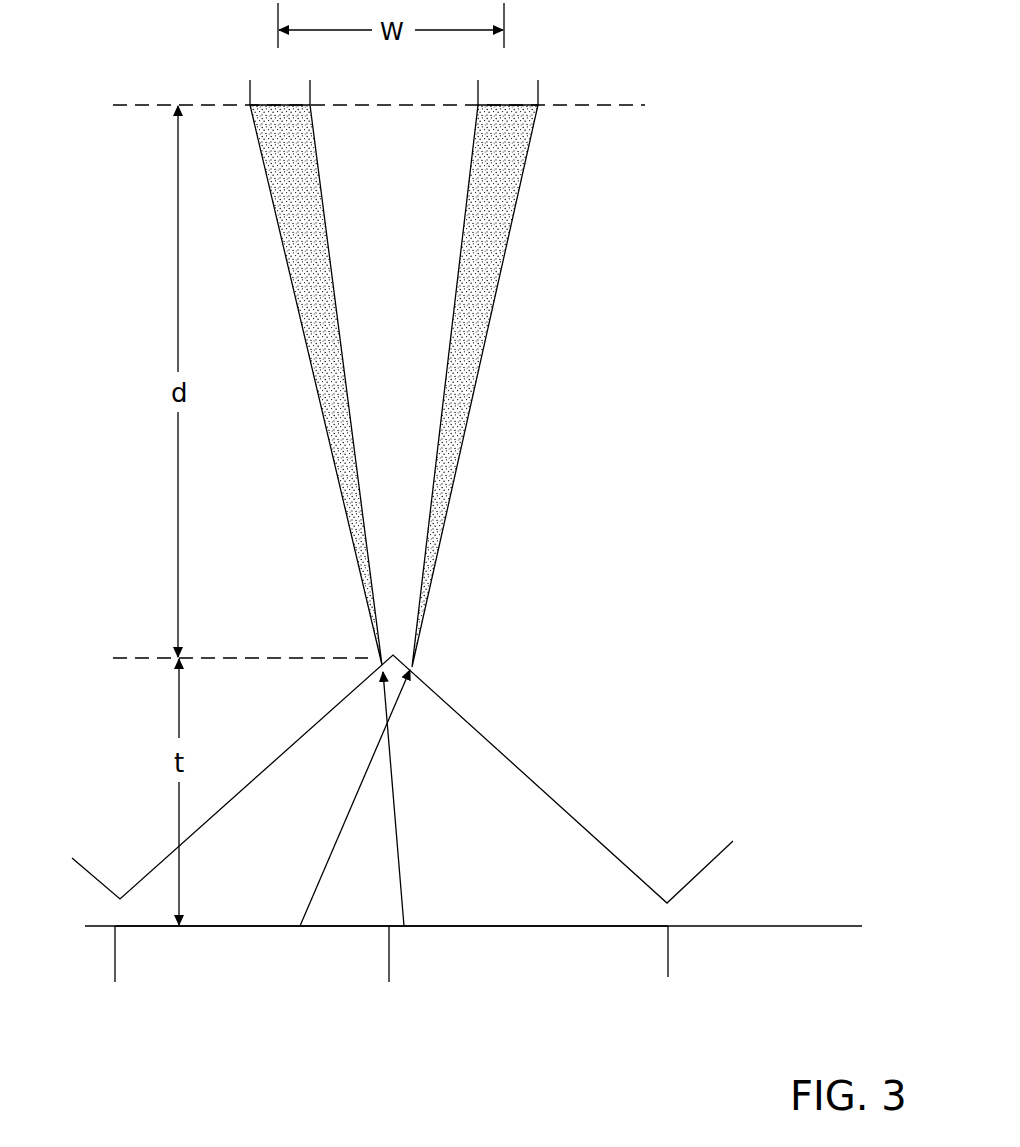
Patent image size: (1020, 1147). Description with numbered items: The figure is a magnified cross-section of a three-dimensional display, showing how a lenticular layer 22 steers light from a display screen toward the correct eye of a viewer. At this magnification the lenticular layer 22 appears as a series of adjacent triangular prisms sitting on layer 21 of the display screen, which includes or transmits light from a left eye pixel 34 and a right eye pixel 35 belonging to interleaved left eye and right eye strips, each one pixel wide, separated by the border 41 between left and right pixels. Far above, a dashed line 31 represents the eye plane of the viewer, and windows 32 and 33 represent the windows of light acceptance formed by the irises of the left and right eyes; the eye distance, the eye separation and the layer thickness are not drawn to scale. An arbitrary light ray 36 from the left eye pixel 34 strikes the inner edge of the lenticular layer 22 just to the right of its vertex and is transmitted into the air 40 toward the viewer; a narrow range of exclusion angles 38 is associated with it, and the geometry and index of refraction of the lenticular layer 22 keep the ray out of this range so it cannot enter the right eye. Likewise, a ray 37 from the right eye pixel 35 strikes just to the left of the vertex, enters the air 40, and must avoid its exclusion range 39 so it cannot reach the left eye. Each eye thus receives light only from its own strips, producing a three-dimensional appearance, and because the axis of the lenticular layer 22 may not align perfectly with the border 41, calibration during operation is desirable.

The layer of the display screen 21 is at (822, 904).
The lenticular layer 22 is at (522, 771).
The eye plane 31 is at (607, 105).
The left eye window 32 is at (311, 88).
The right eye window 33 is at (539, 86).
The left eye pixel 34 is at (212, 925).
The right eye pixel 35 is at (504, 925).
The light ray 36 is at (320, 880).
The light ray 37 is at (400, 845).
The range of exclusion angles 38 is at (505, 255).
The range of exclusion angles 39 is at (326, 218).
The air 40 is at (651, 531).
The border between left pixels and right pixels 41 is at (390, 965).